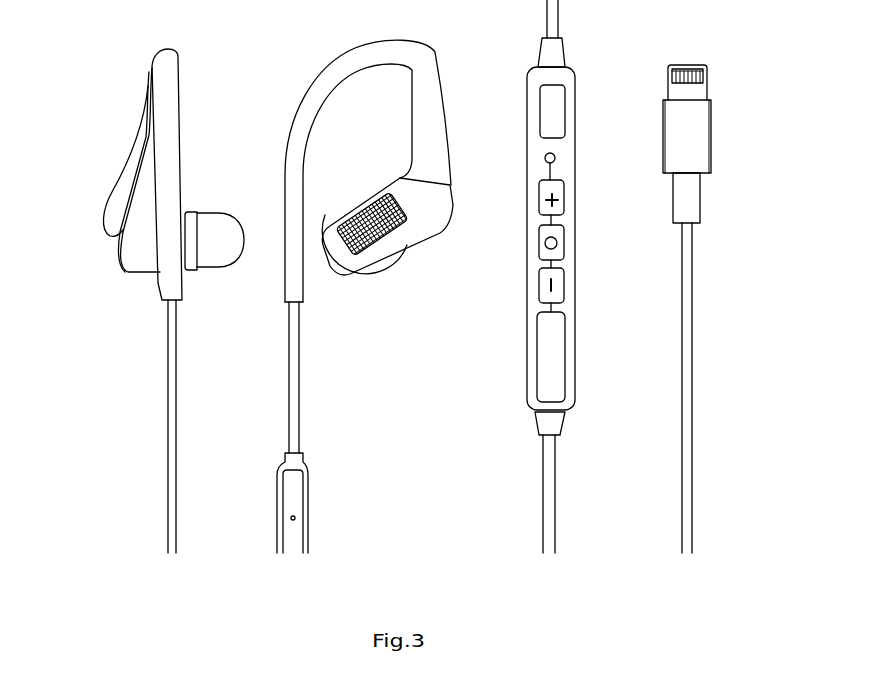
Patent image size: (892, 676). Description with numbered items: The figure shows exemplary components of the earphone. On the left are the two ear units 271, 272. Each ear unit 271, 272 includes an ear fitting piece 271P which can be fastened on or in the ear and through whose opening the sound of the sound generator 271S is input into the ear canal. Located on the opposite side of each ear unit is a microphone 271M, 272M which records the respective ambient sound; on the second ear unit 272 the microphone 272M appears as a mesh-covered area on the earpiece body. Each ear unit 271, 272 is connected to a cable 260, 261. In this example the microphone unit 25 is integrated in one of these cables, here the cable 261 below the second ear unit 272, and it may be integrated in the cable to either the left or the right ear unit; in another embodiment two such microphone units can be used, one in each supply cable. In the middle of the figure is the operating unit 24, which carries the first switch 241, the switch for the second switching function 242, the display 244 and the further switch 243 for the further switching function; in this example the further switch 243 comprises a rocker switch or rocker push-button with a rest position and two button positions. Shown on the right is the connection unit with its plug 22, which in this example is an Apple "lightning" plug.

The plug 22 is at (692, 143).
The operating unit 24 is at (560, 276).
The microphone unit 25 is at (305, 487).
The first switch 241 is at (562, 205).
The switch for the second switching function 242 is at (560, 107).
The further switch 243 is at (557, 353).
The display 244 is at (556, 158).
The cable 260 is at (173, 442).
The cable 261 is at (295, 373).
The ear unit 271 is at (170, 123).
The microphone 271M is at (130, 163).
The sound generator 271S is at (187, 210).
The ear fitting piece 271P is at (217, 262).
The ear unit 272 is at (376, 171).
The microphone 272M is at (383, 262).